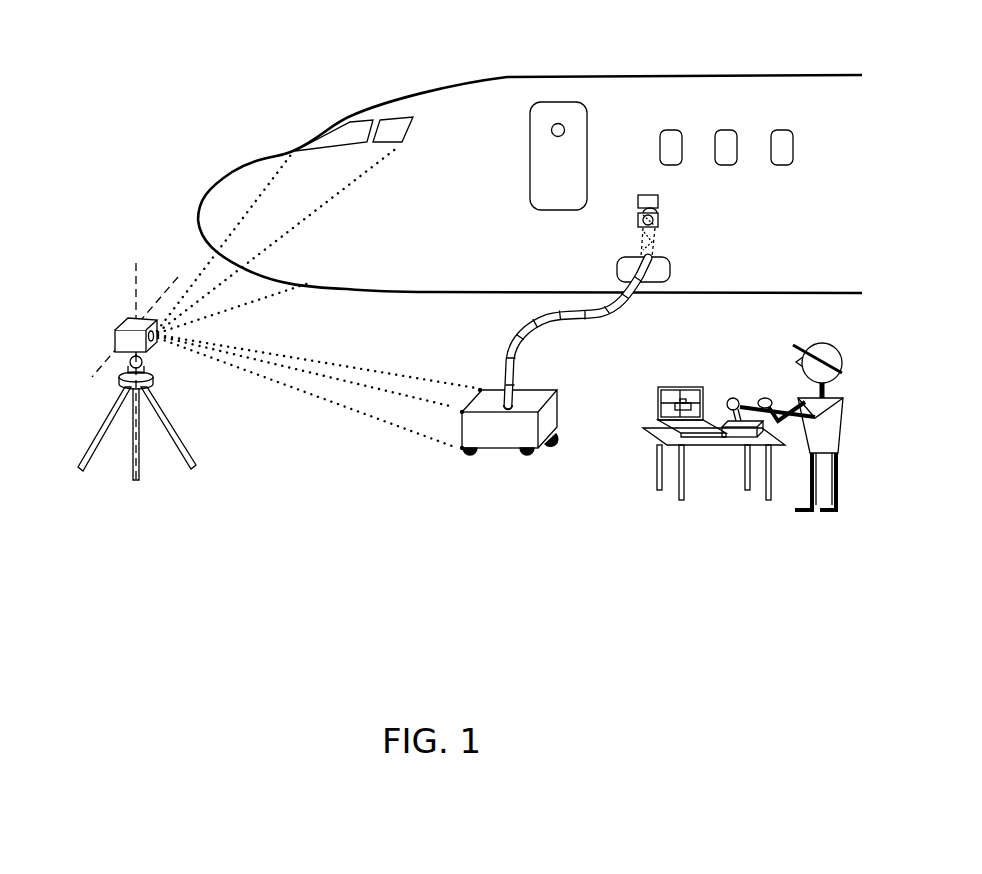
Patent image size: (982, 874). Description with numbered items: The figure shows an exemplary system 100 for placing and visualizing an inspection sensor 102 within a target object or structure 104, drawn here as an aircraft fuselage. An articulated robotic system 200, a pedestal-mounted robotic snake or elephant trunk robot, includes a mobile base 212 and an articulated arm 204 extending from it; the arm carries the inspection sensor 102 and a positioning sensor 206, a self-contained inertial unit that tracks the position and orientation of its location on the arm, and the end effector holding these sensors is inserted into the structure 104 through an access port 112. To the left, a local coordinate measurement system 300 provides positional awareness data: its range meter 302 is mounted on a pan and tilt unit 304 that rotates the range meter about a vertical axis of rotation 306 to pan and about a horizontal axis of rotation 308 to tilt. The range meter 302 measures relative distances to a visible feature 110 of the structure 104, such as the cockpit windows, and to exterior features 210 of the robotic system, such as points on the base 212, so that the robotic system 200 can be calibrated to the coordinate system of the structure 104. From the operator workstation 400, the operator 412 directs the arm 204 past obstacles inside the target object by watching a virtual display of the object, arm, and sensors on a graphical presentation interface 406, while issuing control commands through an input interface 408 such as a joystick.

The system 100 is at (611, 571).
The inspection sensor 102 is at (672, 203).
The structure 104 is at (553, 62).
The visible feature 110 is at (293, 148).
The access port 112 is at (669, 268).
The articulated robotic system 200 is at (529, 381).
The articulated arm 204 is at (562, 318).
The positioning sensor 206 is at (671, 226).
The exterior features 210 is at (480, 386).
The mobile base 212 is at (553, 410).
The local coordinate measurement system 300 is at (254, 313).
The range meter 302 is at (130, 322).
The pan and tilt unit 304 is at (102, 420).
The vertical axis of rotation 306 is at (136, 262).
The horizontal axis of rotation 308 is at (178, 276).
The operator workstation 400 is at (761, 425).
The graphical presentation interface 406 is at (667, 386).
The input interface 408 is at (745, 436).
The operator 412 is at (846, 389).